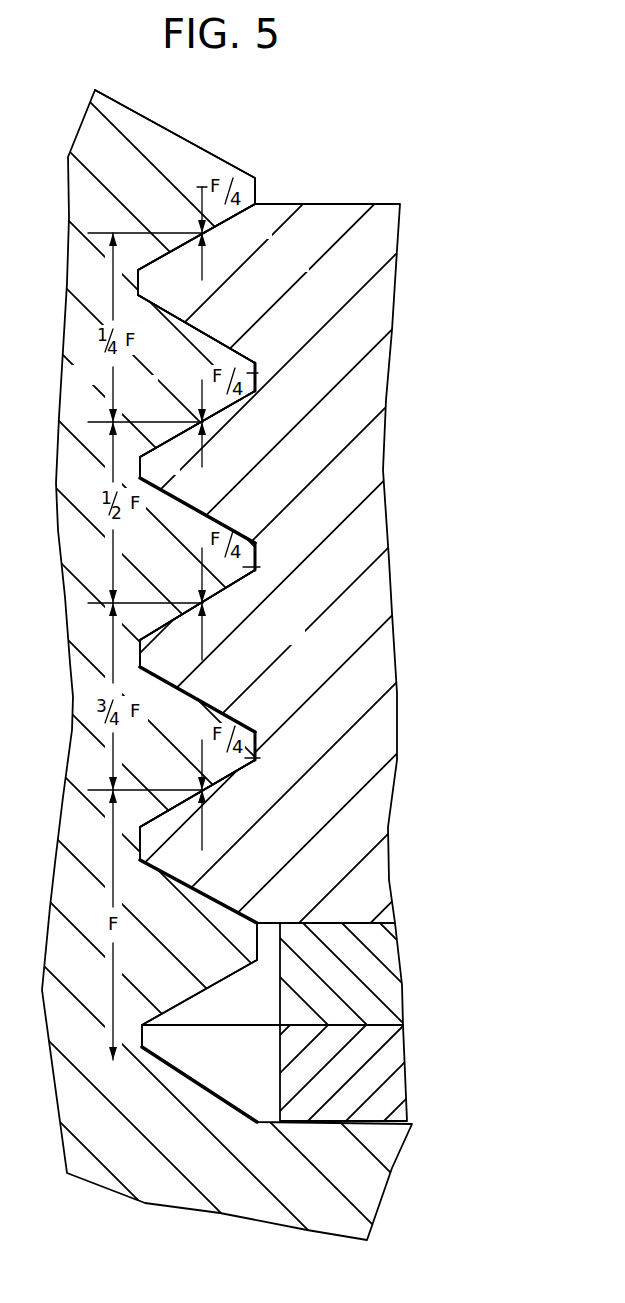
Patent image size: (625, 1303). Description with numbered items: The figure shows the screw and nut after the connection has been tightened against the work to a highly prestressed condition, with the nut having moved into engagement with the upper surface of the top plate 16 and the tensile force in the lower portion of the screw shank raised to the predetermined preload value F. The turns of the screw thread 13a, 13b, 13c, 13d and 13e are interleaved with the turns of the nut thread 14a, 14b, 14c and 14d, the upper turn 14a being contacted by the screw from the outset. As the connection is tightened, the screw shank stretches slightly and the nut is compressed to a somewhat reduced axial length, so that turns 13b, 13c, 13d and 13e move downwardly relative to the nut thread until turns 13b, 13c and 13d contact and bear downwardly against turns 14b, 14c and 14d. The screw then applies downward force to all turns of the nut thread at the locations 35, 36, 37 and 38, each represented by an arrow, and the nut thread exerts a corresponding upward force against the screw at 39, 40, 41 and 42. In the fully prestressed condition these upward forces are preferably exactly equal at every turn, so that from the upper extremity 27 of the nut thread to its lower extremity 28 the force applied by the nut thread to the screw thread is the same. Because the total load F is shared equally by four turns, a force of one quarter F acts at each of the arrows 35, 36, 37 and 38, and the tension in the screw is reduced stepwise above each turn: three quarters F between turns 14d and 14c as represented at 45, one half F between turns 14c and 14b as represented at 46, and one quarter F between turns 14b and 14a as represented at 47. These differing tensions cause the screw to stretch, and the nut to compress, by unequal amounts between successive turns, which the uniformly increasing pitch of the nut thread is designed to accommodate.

The turn of the screw thread 13a is at (205, 160).
The turn of the screw thread 13b is at (260, 373).
The turn of the screw thread 13c is at (263, 567).
The turn of the screw thread 13d is at (257, 757).
The turn of the screw thread 13e is at (227, 947).
The upper turn of the nut thread 14a is at (180, 280).
The turn of the nut thread 14b is at (215, 470).
The turn of the nut thread 14c is at (187, 668).
The lower turn of the nut thread 14d is at (207, 840).
The top plate 16 is at (282, 1012).
The upper extremity of the nut thread 27 is at (332, 203).
The lower extremity of the nut thread 28 is at (360, 920).
The downward force location (arrow) 35 is at (200, 190).
The downward force location (arrow) 36 is at (200, 392).
The downward force location (arrow) 37 is at (202, 565).
The downward force location (arrow) 38 is at (200, 750).
The upward force location 39 is at (207, 262).
The upward force location 40 is at (202, 442).
The upward force location 41 is at (202, 630).
The upward force location 42 is at (210, 827).
The three-quarters F tensile force 45 is at (113, 743).
The one-half F tensile force 46 is at (113, 540).
The one-quarter F tensile force 47 is at (113, 381).